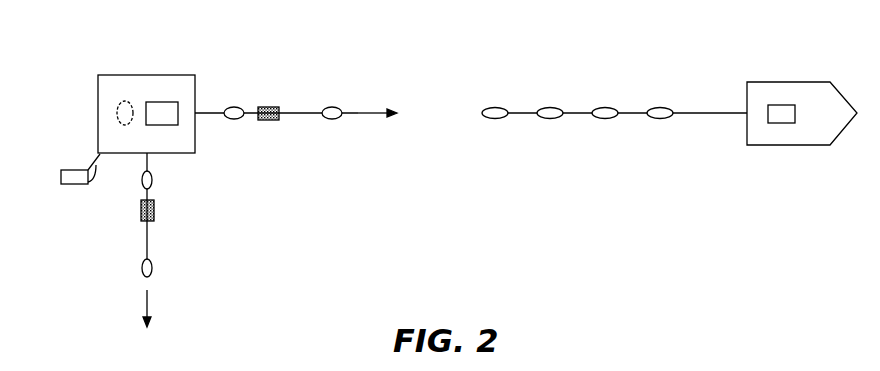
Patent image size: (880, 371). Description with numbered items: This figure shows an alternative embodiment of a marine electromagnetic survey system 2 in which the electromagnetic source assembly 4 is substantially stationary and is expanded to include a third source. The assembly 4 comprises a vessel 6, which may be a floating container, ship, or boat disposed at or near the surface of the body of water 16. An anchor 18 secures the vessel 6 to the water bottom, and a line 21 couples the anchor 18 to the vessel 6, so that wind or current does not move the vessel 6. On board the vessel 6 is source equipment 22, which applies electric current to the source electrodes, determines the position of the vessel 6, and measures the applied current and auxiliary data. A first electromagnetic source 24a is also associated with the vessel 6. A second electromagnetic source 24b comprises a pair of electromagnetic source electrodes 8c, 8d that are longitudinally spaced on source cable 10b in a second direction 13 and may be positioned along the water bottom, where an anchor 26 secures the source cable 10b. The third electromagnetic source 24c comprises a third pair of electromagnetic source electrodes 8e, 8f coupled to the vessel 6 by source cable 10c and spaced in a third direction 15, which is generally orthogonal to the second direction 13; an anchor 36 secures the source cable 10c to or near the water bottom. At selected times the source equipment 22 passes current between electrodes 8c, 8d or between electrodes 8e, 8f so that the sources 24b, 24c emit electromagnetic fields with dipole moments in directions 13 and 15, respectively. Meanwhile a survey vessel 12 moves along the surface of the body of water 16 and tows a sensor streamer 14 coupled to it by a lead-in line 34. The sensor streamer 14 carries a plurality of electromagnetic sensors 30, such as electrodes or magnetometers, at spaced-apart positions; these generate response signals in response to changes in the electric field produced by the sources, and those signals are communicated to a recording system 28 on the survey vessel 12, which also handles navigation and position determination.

The marine electromagnetic survey system 2 is at (663, 296).
The electromagnetic source assembly 4 is at (246, 36).
The vessel 6 is at (170, 75).
The electromagnetic source electrode 8c is at (234, 107).
The electromagnetic source electrode 8d is at (335, 107).
The electromagnetic source electrode 8e is at (153, 182).
The electromagnetic source electrode 8f is at (153, 271).
The source cable 10b is at (297, 110).
The source cable 10c is at (150, 237).
The survey vessel 12 is at (790, 82).
The second direction 13 is at (373, 107).
The sensor streamer 14 is at (628, 109).
The third direction 15 is at (150, 302).
The body of water 16 is at (485, 36).
The anchor 18 is at (72, 170).
The line 21 is at (96, 175).
The source equipment 22 is at (155, 102).
The first electromagnetic source 24a is at (110, 109).
The second electromagnetic source 24b is at (266, 137).
The third electromagnetic source 24c is at (115, 218).
The anchor 26 is at (274, 121).
The recording system 28 is at (781, 124).
The electromagnetic sensors 30 is at (658, 121).
The lead-in line 34 is at (696, 110).
The anchor 36 is at (155, 210).